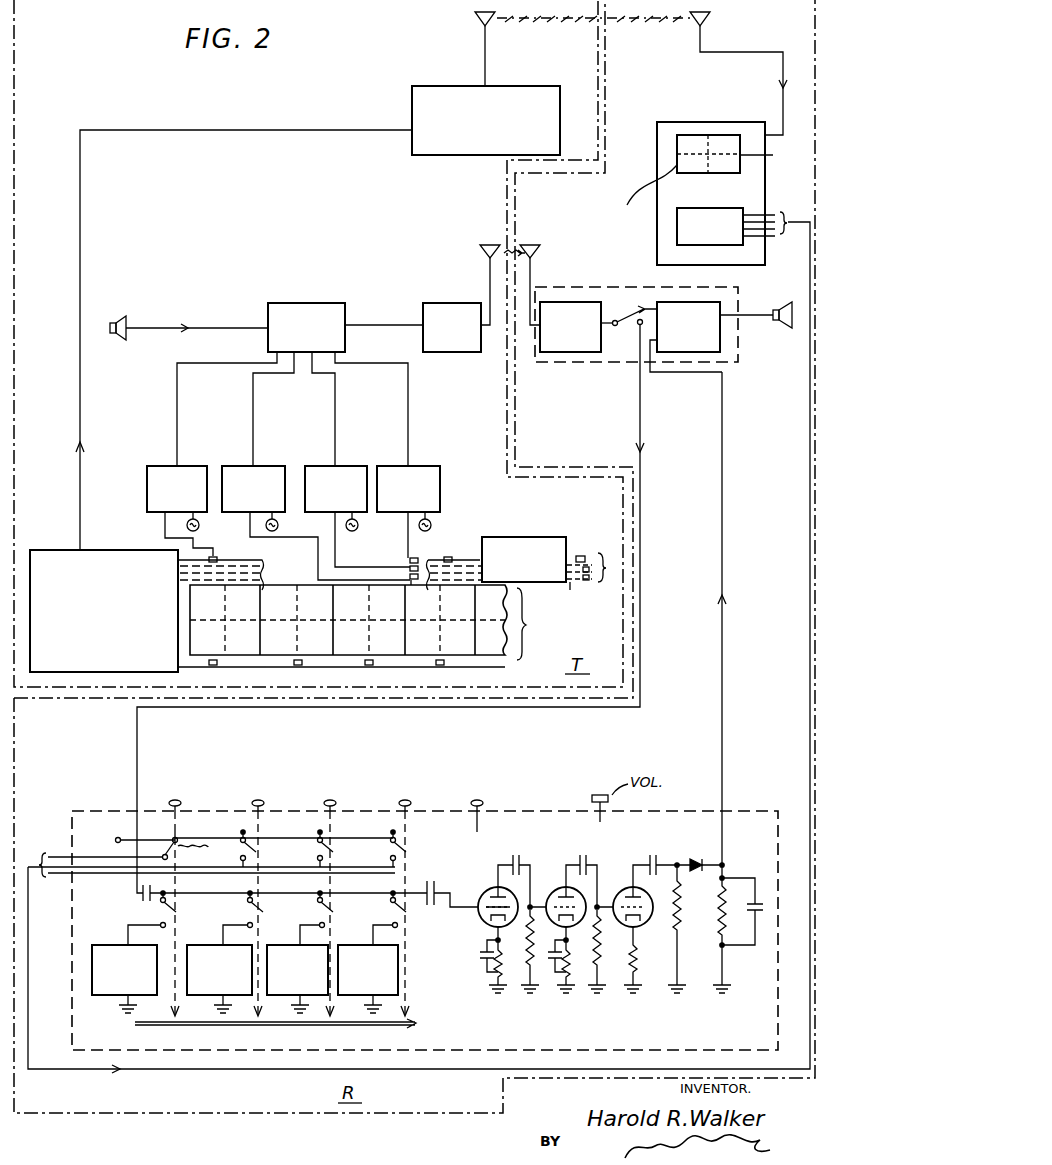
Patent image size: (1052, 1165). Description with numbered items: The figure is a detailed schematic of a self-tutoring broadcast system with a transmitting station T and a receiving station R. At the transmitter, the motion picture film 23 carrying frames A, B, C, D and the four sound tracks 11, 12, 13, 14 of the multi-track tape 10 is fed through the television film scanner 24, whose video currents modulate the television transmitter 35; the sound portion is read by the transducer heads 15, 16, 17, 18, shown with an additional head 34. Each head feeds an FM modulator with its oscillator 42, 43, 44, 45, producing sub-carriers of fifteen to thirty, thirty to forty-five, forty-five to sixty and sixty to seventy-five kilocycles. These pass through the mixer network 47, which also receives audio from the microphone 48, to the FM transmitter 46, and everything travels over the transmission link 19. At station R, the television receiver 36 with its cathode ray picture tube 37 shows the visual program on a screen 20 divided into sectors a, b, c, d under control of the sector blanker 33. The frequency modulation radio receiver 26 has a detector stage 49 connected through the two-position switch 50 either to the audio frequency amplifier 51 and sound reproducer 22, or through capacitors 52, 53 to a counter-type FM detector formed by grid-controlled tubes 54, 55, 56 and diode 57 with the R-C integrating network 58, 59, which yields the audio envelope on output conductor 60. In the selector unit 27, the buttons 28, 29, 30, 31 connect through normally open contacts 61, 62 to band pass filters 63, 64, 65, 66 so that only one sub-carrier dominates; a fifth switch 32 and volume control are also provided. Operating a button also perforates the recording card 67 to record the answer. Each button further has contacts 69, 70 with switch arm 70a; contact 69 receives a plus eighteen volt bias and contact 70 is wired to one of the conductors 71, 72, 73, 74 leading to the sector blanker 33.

The multi-track sound recording tape 10 is at (554, 559).
The sound track 11 is at (577, 555).
The sound track 12 is at (587, 573).
The sound track 13 is at (583, 581).
The sound track 14 is at (570, 590).
The pick-up or transducer head 15 is at (415, 557).
The pick-up or transducer head 16 is at (410, 567).
The pick-up or transducer head 17 is at (410, 577).
The pick-up or transducer head 18 is at (416, 589).
The transmission link 19 is at (606, 30).
The visual displaying screen 20 is at (677, 150).
The sound reproducer 22 is at (786, 302).
The motion picture film 23 is at (362, 612).
The television film scanner 24 is at (68, 550).
The frequency modulation radio receiver 26 is at (596, 278).
The plural button selector unit 27 is at (265, 1050).
The selector button 28 is at (175, 800).
The selector button 29 is at (258, 800).
The selector button 30 is at (330, 800).
The selector button 31 is at (405, 800).
The manually operable switch 32 is at (478, 800).
The sector blanker 33 is at (695, 208).
The sync pulse head 34 is at (208, 558).
The television transmitter 35 is at (450, 85).
The television receiver 36 is at (765, 180).
The cathode ray picture tube 37 is at (768, 157).
The oscillator 42 is at (199, 530).
The oscillator 43 is at (278, 525).
The oscillator 44 is at (358, 528).
The oscillator 45 is at (431, 525).
The FM transmitter 46 is at (445, 302).
The mixer network 47 is at (294, 302).
The microphone 48 is at (113, 320).
The detector stage 49 is at (630, 310).
The two-position switch 50 is at (397, 595).
The audio frequency amplifier 51 is at (720, 301).
The capacitor 52 is at (140, 897).
The capacitor 53 is at (431, 884).
The grid-controlled tube 54 is at (485, 890).
The grid-controlled tube 55 is at (555, 890).
The grid-controlled tube 56 is at (622, 890).
The diode 57 is at (697, 858).
The resistor of R-C integrating network 58 is at (687, 928).
The capacitor of R-C integrating network 59 is at (765, 905).
The output conductor 60 is at (722, 550).
The normally open switch contact 61 is at (178, 905).
The normally open switch contact 62 is at (160, 927).
The band pass filter 63 is at (100, 1008).
The band pass filter 64 is at (200, 1008).
The band pass filter 65 is at (280, 1006).
The band pass filter 66 is at (350, 1006).
The recording card or web 67 is at (418, 1025).
The normally open contact 69 is at (178, 836).
The normally open contact 70 is at (167, 850).
The switch arm 70a is at (208, 847).
The conductor 71 is at (58, 856).
The conductor 72 is at (47, 864).
The conductor 73 is at (52, 875).
The conductor 74 is at (66, 876).